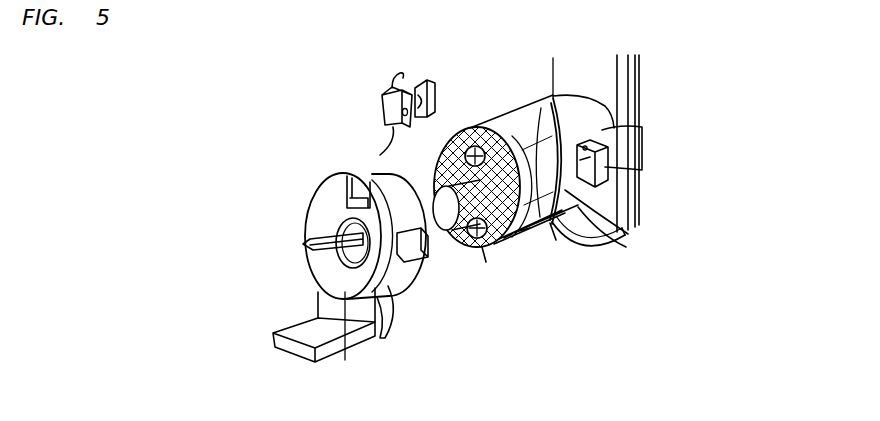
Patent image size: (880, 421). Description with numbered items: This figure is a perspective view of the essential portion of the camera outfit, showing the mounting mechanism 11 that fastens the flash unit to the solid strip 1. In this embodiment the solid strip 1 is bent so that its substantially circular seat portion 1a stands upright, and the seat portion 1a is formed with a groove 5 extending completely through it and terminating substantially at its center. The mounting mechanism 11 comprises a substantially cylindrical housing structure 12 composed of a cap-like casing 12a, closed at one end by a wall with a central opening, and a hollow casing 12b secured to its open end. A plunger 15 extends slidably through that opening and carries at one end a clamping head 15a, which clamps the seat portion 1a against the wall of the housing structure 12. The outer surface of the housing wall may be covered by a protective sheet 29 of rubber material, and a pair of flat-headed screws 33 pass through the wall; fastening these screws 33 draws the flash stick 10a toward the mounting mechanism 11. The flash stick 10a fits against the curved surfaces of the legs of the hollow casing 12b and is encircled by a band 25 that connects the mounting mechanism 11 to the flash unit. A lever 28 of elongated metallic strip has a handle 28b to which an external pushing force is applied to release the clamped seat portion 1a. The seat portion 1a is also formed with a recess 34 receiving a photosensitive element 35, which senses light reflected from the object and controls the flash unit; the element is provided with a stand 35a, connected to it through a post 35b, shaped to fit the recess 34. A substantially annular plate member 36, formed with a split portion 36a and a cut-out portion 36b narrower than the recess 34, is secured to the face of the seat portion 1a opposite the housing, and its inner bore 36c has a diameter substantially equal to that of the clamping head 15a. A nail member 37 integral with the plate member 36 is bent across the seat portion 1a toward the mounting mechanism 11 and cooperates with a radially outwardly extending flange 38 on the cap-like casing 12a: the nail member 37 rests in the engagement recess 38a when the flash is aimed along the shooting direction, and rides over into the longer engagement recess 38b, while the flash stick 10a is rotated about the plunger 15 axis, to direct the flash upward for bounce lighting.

The solid strip 1 is at (327, 348).
The seat portion 1a is at (332, 300).
The groove 5 is at (312, 238).
The flash stick 10a is at (639, 90).
The mounting mechanism 11 is at (519, 234).
The cylindrical housing structure 12 is at (587, 242).
The cap-like casing 12a is at (512, 236).
The hollow casing 12b is at (627, 236).
The plunger 15 is at (455, 185).
The clamping head 15a is at (420, 251).
The band 25 is at (633, 133).
The lever 28 is at (596, 171).
The handle 28b is at (602, 160).
The protective sheet 29 is at (520, 117).
The flat-headed screws 33 is at (478, 130).
The recess 34 is at (360, 178).
The photosensitive element 35 is at (382, 105).
The stand 35a is at (435, 90).
The post 35b is at (407, 92).
The annular plate member 36 is at (323, 268).
The split portion 36a is at (310, 245).
The cut-out portion 36b is at (350, 198).
The inner bore 36c is at (352, 342).
The nail member 37 is at (400, 312).
The flange 38 is at (572, 112).
The engagement recess 38a is at (552, 222).
The engagement recess 38b is at (495, 245).